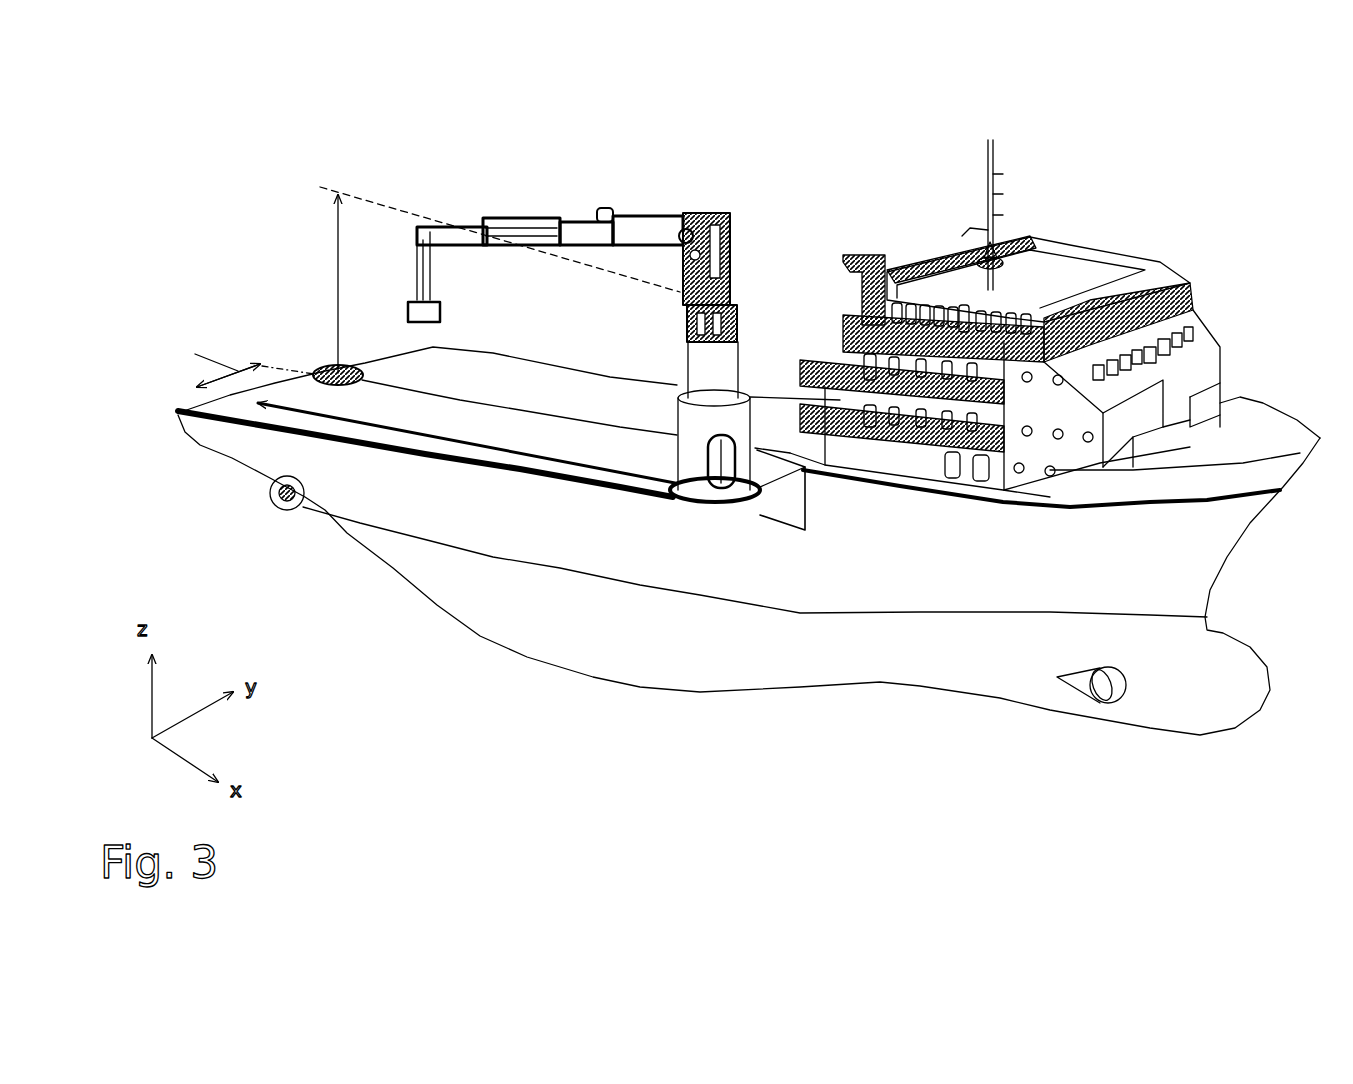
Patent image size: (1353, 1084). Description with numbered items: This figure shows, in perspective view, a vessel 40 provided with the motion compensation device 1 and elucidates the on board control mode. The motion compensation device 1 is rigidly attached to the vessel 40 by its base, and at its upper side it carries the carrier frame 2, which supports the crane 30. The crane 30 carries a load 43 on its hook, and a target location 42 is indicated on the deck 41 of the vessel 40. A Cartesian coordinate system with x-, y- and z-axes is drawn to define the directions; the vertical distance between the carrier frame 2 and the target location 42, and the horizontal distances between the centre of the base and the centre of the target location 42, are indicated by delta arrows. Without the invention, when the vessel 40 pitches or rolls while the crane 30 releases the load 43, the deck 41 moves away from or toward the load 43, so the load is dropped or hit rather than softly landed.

The motion compensation device 1 is at (673, 362).
The carrier frame 2 is at (737, 305).
The crane 30 is at (713, 190).
The vessel 40 is at (806, 730).
The deck 41 is at (462, 380).
The target location 42 is at (322, 370).
The load 43 is at (410, 295).